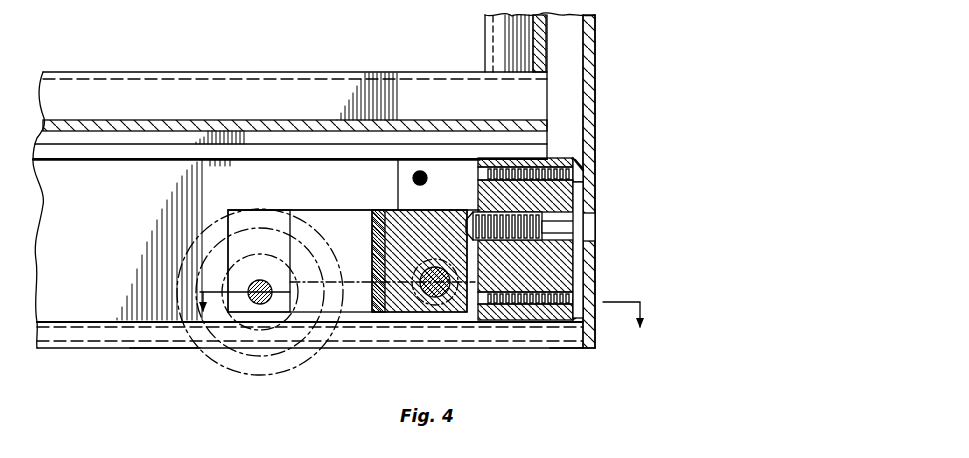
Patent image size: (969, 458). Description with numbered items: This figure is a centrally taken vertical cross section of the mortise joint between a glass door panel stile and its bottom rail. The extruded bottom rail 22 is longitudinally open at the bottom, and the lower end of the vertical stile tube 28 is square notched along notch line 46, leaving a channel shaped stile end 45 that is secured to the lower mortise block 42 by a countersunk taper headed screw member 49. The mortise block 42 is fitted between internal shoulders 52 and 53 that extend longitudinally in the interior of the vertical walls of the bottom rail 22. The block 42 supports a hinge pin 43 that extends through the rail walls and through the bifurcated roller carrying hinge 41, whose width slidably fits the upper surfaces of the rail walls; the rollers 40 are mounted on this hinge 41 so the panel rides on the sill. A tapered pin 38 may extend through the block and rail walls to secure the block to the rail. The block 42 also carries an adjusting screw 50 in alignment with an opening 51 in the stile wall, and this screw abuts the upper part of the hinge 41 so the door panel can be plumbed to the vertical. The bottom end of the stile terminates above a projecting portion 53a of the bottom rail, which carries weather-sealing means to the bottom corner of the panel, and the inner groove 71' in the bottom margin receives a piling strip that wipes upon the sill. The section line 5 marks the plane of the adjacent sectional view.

The bottom rail 22 is at (255, 73).
The vertical stile tube 28 is at (597, 83).
The tapered pin 38 is at (412, 178).
The roller 40 is at (268, 377).
The roller carrying hinge 41 is at (392, 212).
The lower mortise block 42 is at (491, 191).
The hinge pin 43 is at (432, 291).
The channel shaped stile end 45 is at (597, 139).
The notch line 46 is at (493, 72).
The countersunk taper headed screw member 49 is at (590, 171).
The adjusting screw 50 is at (578, 219).
The opening 51 is at (589, 230).
The internal shoulder 52 is at (97, 159).
The internal shoulder 53 is at (82, 321).
The projecting portion of the bottom rail 53a is at (550, 351).
The inner groove 71' is at (164, 365).
The section line 5- 5 is at (421, 268).